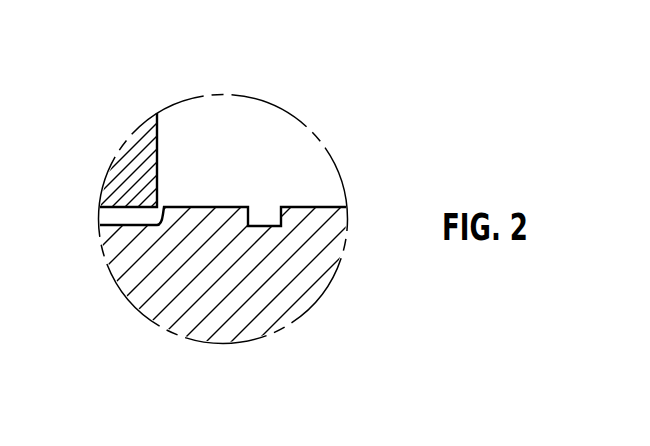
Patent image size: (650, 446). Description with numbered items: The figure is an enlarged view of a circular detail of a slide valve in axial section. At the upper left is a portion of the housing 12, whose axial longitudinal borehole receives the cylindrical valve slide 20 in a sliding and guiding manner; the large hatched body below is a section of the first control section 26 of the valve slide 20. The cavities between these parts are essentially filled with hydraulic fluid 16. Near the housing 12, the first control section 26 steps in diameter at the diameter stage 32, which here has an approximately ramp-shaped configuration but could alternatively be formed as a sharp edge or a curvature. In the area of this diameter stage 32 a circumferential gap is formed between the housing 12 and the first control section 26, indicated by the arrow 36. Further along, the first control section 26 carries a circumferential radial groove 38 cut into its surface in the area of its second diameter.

The housing 12 is at (130, 173).
The fluid 16 is at (212, 122).
The valve slide 20 is at (268, 275).
The first control section 26 is at (207, 208).
The diameter stage 32 is at (163, 215).
The arrow 36 is at (170, 190).
The circumferential radial groove 38 is at (267, 226).